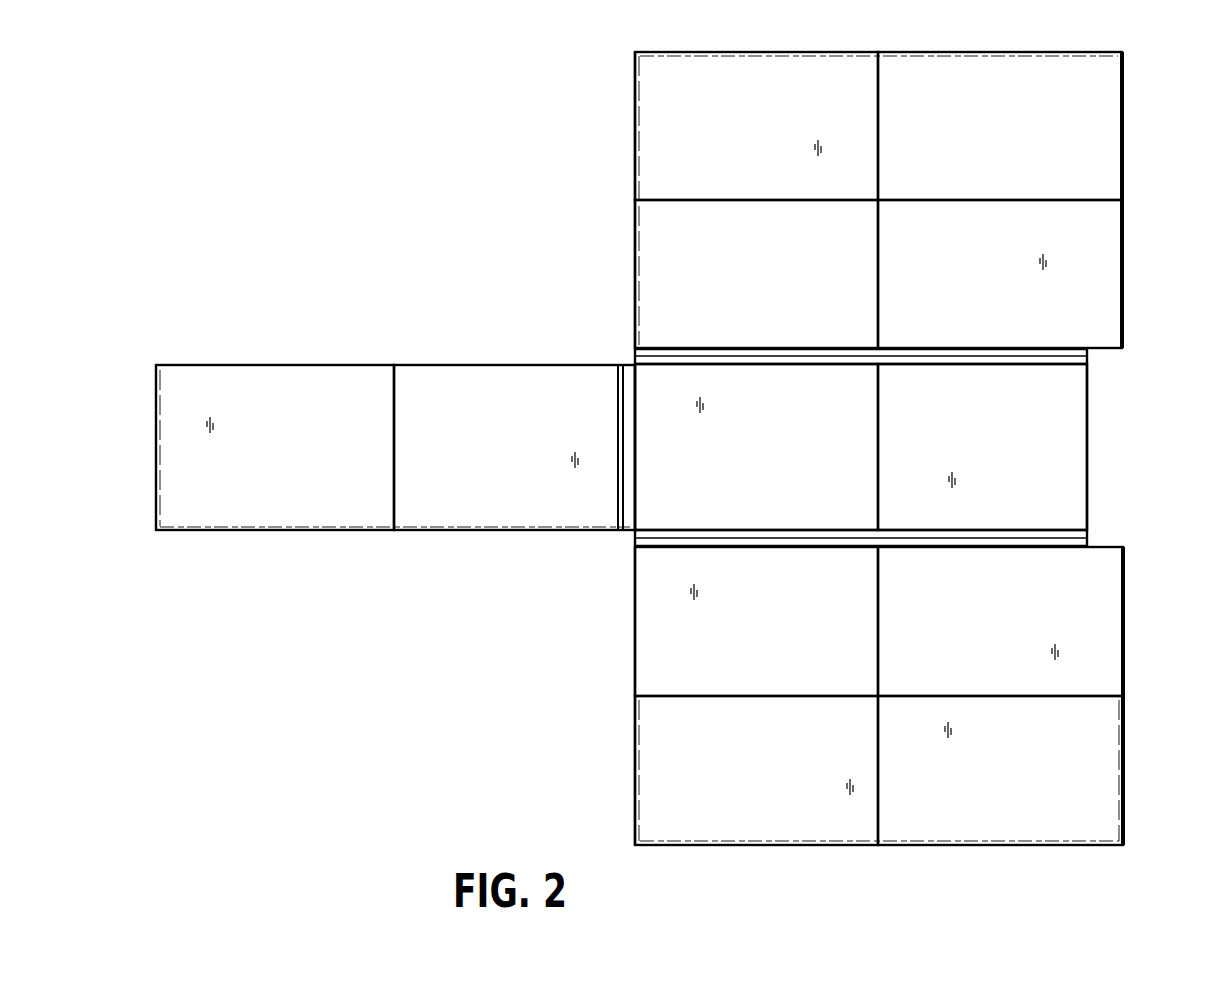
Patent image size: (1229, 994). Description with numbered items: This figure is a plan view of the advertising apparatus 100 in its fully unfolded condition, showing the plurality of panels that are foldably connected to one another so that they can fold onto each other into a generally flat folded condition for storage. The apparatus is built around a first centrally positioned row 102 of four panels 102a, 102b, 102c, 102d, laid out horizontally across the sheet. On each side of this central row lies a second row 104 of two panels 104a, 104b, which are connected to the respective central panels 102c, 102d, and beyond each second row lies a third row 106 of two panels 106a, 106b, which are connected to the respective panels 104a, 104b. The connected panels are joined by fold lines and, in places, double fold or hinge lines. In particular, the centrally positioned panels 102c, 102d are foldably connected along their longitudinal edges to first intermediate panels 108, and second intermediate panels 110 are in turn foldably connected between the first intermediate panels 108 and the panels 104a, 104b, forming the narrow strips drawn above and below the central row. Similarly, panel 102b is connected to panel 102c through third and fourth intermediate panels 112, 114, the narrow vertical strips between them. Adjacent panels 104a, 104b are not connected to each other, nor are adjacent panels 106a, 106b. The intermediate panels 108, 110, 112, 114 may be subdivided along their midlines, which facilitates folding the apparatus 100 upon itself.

The advertising apparatus 100 is at (455, 218).
The first centrally positioned row 102 is at (308, 347).
The panel 102a is at (251, 464).
The panel 102b is at (486, 464).
The centrally positioned panel 102c is at (731, 464).
The centrally positioned panel 102d is at (966, 464).
The second row 104 is at (1128, 222).
The panel 104a is at (731, 284).
The panel 104b is at (966, 284).
The third row 106 is at (1131, 116).
The panel 106a is at (731, 134).
The panel 106b is at (966, 134).
The first intermediate panel 108 is at (645, 359).
The second intermediate panel 110 is at (693, 348).
The third intermediate panel 112 is at (630, 448).
The fourth intermediate panel 114 is at (615, 488).